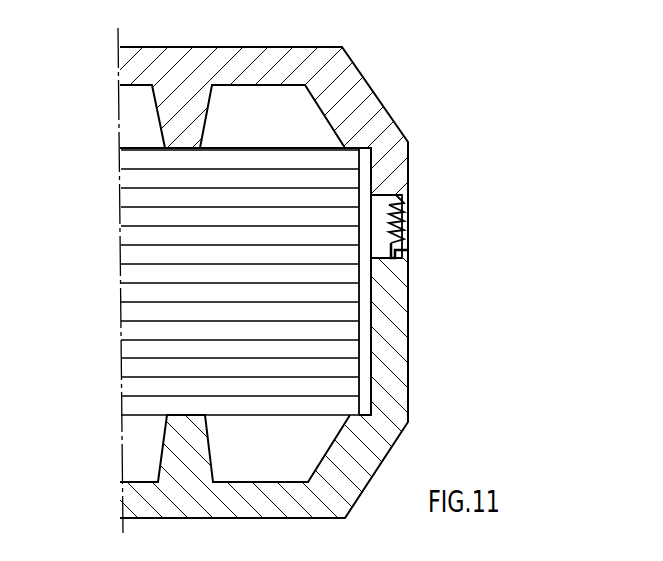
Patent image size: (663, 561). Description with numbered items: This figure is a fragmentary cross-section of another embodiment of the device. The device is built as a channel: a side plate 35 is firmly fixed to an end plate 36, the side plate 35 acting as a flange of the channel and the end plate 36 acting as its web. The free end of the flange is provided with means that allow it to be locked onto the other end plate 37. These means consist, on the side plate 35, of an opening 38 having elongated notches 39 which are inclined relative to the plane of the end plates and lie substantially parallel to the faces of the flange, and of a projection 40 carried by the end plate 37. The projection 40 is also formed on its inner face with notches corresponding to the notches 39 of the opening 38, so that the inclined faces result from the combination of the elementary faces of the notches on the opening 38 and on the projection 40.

The side plate 35 is at (390, 331).
The end plate 36 is at (202, 497).
The end plate 37 is at (172, 67).
The opening 38 is at (396, 256).
The elongated notch 39 is at (398, 231).
The projection 40 is at (397, 217).